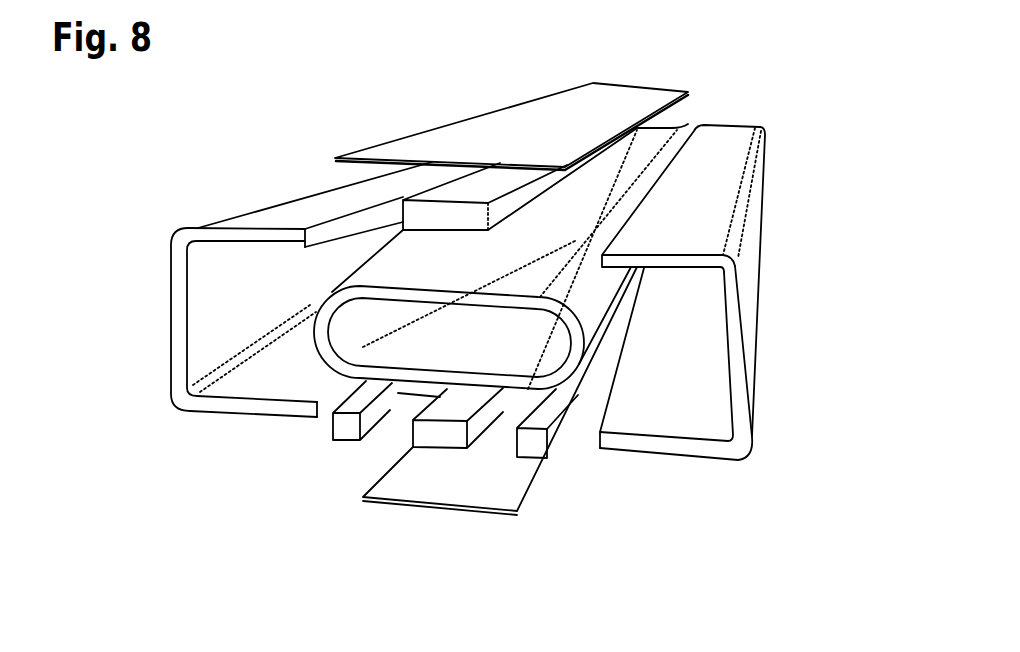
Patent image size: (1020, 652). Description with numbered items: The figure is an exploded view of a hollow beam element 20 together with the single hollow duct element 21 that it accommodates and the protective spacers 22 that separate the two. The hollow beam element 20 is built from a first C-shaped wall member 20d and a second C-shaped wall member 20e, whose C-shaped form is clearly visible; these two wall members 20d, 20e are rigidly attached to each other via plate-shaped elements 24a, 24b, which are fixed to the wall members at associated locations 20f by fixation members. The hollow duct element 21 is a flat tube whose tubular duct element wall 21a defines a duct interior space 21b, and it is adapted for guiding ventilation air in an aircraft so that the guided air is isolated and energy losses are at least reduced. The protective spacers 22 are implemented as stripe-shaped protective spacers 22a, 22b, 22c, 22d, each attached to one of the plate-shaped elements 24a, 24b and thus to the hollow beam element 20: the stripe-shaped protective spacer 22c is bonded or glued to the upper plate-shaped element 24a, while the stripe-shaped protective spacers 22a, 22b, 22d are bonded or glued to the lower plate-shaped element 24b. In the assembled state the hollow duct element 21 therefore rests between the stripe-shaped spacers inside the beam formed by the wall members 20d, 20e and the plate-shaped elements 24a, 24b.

The hollow beam element 20 is at (511, 362).
The first C-shaped wall member 20d is at (216, 221).
The second C-shaped wall member 20e is at (756, 370).
The locations 20f is at (405, 496).
The hollow duct element 21 is at (450, 276).
The tubular duct element wall 21a is at (333, 365).
The duct interior space 21b is at (380, 327).
The protective spacers 22 is at (437, 334).
The stripe-shaped protective spacer 22a is at (535, 448).
The stripe-shaped protective spacer 22b is at (337, 433).
The stripe-shaped protective spacer 22c is at (415, 220).
The stripe-shaped protective spacer 22d is at (430, 433).
The plate-shaped element 24a is at (642, 94).
The plate-shaped element 24b is at (465, 492).